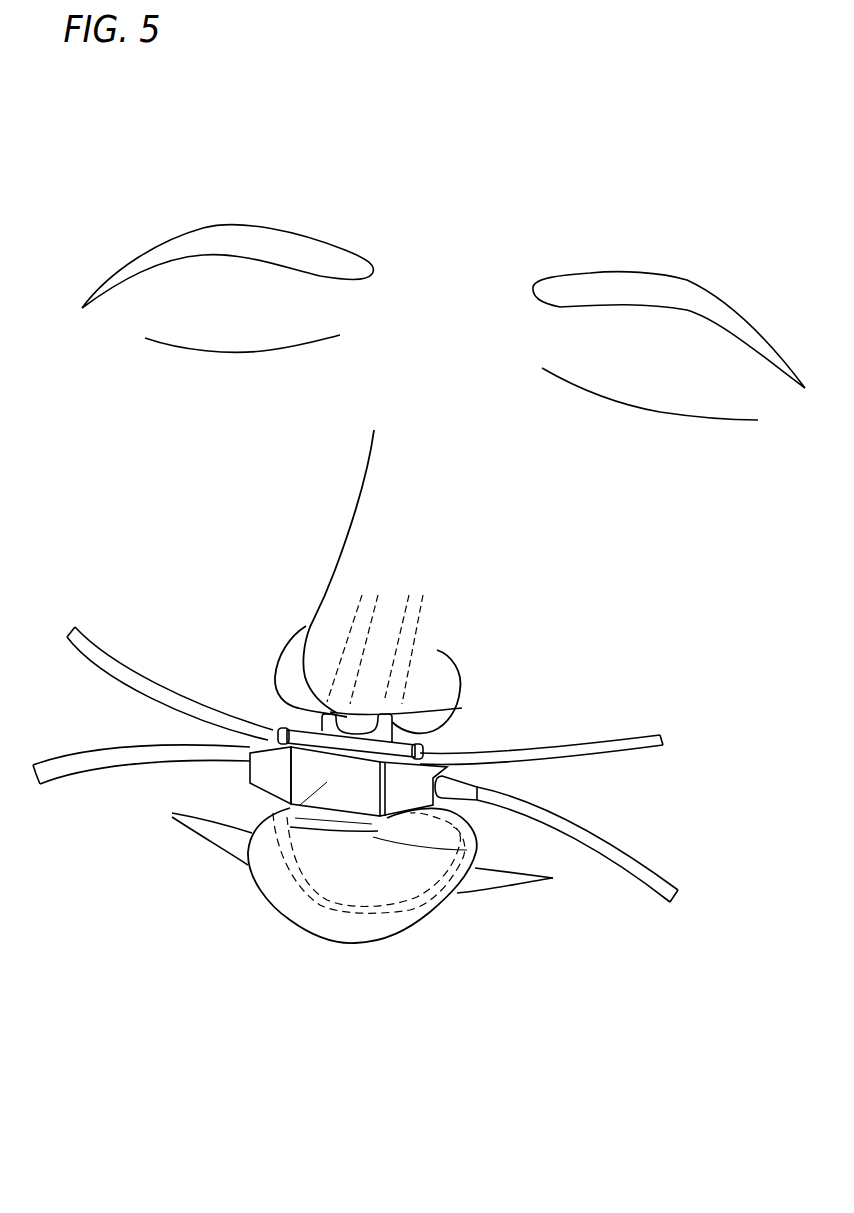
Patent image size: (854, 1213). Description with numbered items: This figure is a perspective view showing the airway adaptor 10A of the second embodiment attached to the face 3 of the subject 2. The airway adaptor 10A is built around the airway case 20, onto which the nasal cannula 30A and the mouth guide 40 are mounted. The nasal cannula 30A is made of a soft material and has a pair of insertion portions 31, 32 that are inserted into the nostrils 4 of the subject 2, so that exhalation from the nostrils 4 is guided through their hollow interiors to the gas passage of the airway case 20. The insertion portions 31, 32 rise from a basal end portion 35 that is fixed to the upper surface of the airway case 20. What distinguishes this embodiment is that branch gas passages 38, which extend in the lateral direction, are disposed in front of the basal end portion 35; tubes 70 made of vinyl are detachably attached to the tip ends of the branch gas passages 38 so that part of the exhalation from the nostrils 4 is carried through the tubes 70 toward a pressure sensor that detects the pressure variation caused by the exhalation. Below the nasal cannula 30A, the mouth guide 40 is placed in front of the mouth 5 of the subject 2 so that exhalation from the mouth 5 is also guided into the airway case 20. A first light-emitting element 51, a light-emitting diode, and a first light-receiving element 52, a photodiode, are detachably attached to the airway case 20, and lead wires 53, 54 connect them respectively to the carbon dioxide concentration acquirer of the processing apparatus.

The subject 2 is at (141, 179).
The face 3 is at (112, 521).
The nostrils 4 is at (357, 620).
The mouth 5 is at (480, 885).
The tubes 70 is at (123, 672).
The insertion portion 32 is at (327, 680).
The insertion portion 31 is at (415, 684).
The lead wire 54 is at (88, 757).
The branch gas passages 38 is at (275, 732).
The basal end portion 35 is at (372, 715).
The first light-receiving element 52 is at (268, 780).
The first light-emitting element 51 is at (473, 801).
The lead wire 53 is at (642, 860).
The airway case 20 is at (262, 785).
The nasal cannula 30A is at (367, 748).
The mouth guide 40 is at (242, 1005).
The airway adaptor 10A is at (398, 863).